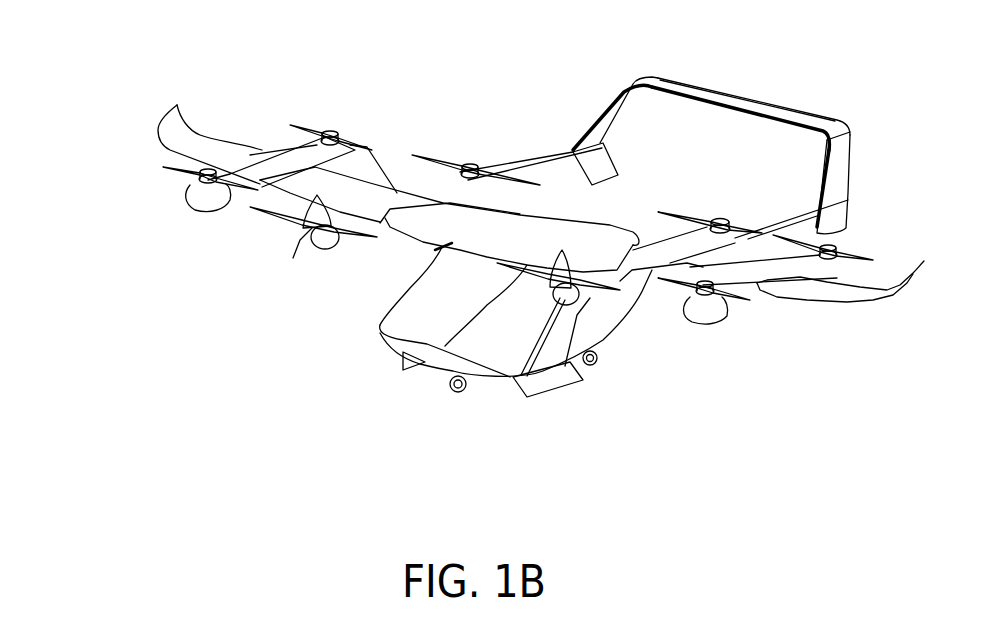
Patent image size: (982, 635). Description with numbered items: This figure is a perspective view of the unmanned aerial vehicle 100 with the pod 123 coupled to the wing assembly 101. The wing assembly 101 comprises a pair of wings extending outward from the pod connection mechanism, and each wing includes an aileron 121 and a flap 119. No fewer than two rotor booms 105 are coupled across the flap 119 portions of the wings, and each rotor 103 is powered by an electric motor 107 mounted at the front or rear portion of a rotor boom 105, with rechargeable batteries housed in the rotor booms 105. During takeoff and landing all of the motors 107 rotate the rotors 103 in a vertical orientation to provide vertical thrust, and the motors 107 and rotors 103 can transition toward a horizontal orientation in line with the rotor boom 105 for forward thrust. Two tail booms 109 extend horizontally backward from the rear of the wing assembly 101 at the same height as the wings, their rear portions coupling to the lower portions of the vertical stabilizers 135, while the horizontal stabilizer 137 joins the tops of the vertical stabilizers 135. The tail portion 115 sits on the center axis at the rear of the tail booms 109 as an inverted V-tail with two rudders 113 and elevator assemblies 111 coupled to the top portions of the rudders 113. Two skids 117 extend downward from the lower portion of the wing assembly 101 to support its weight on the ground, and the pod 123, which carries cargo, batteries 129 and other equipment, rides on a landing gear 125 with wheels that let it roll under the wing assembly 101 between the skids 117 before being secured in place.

The unmanned aerial vehicle 100 is at (152, 70).
The wing assembly 101 is at (492, 217).
The rotor 103 is at (173, 165).
The rotor boom 105 is at (752, 303).
The electric motor 107 is at (307, 240).
The tail boom 109 is at (546, 165).
The elevator assembly 111 is at (721, 95).
The rudder 113 is at (610, 120).
The tail portion 115 is at (757, 105).
The skid 117 is at (560, 383).
The flap 119 is at (360, 178).
The aileron 121 is at (242, 165).
The pod 123 is at (388, 330).
The landing gear 125 is at (447, 387).
The batteries 129 is at (423, 290).
The vertical stabilizer 135 is at (843, 177).
The horizontal stabilizer 137 is at (812, 122).